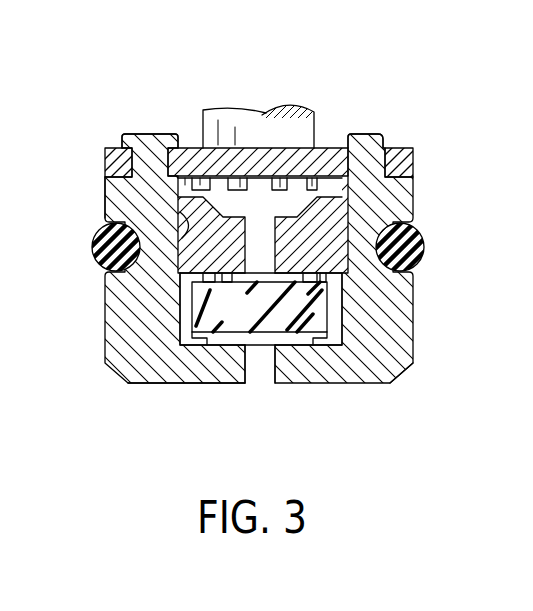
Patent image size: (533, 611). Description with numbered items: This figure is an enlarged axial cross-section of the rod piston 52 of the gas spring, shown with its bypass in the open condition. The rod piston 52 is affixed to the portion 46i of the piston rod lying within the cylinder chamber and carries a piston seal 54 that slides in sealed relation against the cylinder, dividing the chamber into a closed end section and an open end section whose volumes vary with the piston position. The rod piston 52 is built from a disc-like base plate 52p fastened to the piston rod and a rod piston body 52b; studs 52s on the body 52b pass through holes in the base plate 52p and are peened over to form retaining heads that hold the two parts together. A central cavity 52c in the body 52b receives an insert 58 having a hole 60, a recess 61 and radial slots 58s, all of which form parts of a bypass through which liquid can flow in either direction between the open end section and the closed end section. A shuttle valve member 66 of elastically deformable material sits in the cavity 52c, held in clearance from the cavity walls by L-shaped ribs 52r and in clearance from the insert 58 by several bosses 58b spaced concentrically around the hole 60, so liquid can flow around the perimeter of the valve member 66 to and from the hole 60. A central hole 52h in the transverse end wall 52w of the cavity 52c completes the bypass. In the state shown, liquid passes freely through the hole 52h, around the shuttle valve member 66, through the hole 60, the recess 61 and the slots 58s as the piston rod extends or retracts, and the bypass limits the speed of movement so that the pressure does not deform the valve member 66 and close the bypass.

The portion of the piston rod 46i is at (203, 133).
The rod piston 52 is at (80, 148).
The studs 52s is at (140, 133).
The base plate 52p is at (405, 162).
The rod piston body 52b is at (105, 197).
The central cavity 52c is at (180, 246).
The L-shaped ribs 52r is at (338, 318).
The transverse end wall 52w is at (213, 383).
The central hole 52h is at (266, 368).
The piston seal 54 is at (410, 252).
The insert 58 is at (325, 213).
The radial slots 58s is at (277, 184).
The bosses 58b is at (196, 277).
The hole 60 is at (262, 242).
The recess 61 is at (302, 112).
The shuttle valve member 66 is at (243, 317).